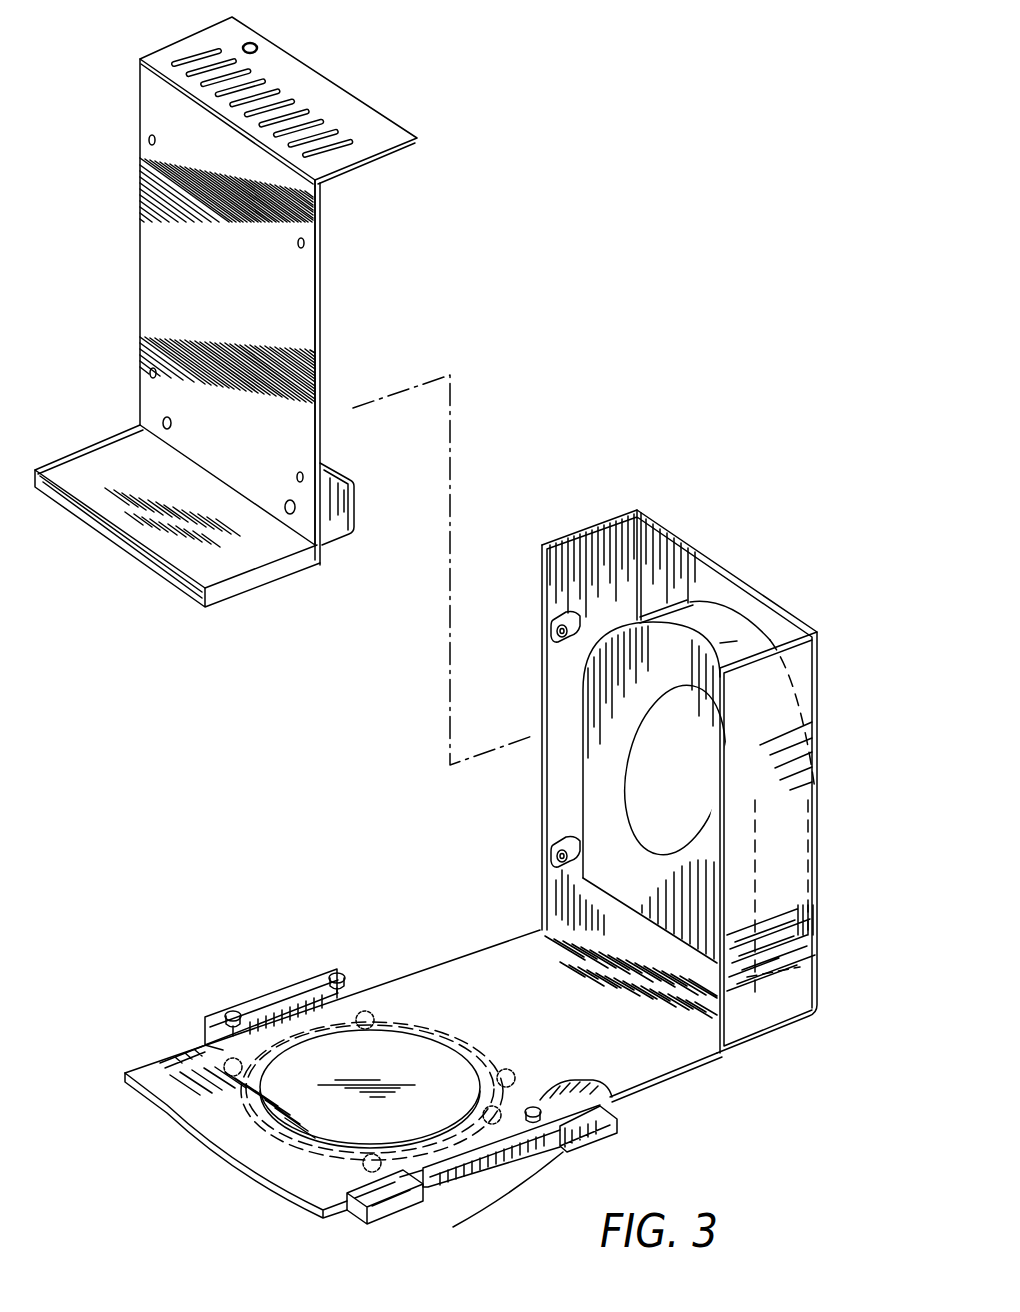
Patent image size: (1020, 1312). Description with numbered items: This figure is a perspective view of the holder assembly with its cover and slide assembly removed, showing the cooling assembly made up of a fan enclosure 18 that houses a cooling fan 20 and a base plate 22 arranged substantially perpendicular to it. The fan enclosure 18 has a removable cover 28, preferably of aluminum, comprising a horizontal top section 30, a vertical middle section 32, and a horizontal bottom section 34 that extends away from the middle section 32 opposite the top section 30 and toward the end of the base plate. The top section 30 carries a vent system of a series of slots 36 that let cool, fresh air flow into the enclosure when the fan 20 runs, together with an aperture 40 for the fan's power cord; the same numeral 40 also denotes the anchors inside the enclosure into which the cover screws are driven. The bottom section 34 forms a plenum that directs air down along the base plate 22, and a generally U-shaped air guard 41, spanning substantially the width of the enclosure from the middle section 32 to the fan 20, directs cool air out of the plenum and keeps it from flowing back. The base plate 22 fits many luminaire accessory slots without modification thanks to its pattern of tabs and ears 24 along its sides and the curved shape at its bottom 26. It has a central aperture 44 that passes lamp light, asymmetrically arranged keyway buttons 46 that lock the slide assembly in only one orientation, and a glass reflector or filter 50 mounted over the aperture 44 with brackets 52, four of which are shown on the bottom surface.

The fan enclosure 18 is at (665, 545).
The cooling fan 20 is at (722, 630).
The base plate 22 is at (685, 1050).
The tabs and ears 24 is at (420, 1200).
The curved bottom of the base plate 26 is at (170, 1120).
The removable cover 28 is at (298, 298).
The top section 30 is at (295, 83).
The middle section 32 is at (158, 287).
The bottom section 34 is at (106, 462).
The slots 36 is at (335, 128).
The aperture 40 is at (258, 43).
The air guard 41 is at (358, 492).
The central aperture 44 is at (300, 1110).
The keyway buttons 46 is at (233, 1016).
The glass reflector or filter 50 is at (403, 1025).
The brackets 52 is at (185, 1050).